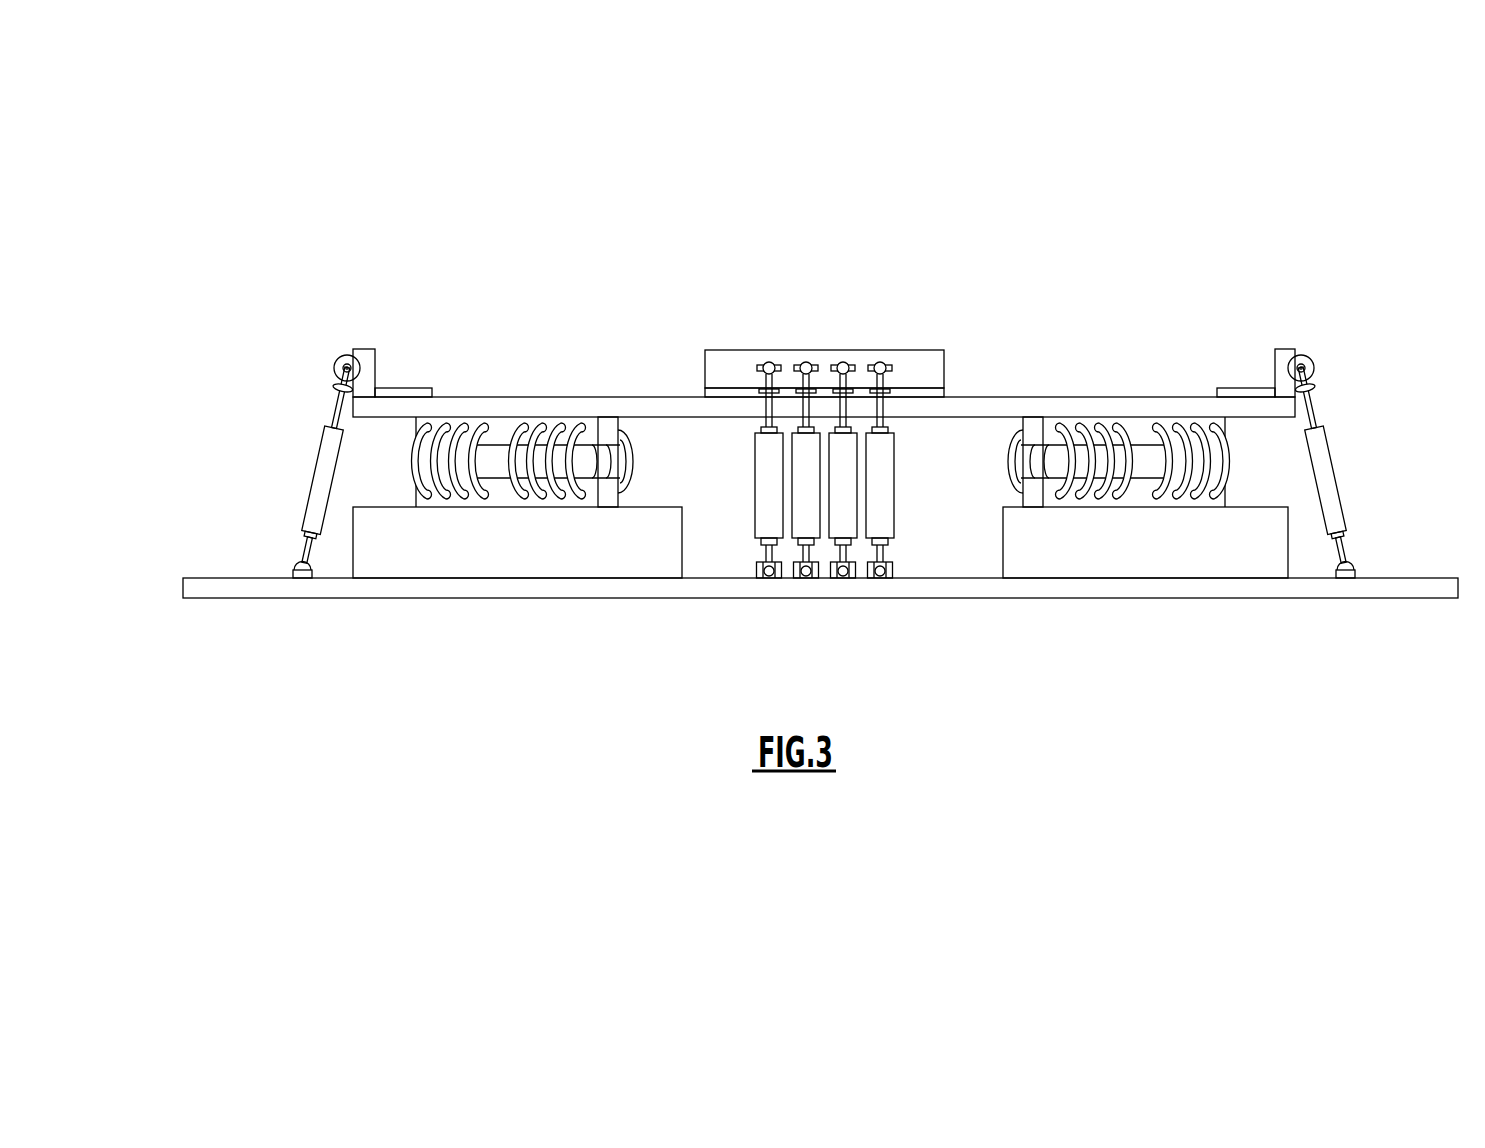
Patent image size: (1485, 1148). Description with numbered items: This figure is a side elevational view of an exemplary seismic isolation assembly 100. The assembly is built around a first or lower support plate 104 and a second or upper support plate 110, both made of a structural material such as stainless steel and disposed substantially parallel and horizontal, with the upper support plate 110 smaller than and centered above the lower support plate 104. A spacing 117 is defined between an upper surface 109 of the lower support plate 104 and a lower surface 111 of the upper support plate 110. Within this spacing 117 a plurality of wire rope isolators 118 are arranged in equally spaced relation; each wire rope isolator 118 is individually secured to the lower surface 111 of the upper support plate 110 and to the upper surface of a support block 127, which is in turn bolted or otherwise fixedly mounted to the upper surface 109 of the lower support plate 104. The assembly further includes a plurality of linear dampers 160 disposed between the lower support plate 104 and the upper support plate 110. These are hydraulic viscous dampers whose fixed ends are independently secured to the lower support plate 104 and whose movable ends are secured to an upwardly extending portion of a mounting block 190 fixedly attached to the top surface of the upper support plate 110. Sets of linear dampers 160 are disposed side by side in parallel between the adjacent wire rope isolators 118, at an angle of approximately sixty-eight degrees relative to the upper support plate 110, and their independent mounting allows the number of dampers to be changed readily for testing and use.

The seismic isolation assembly 100 is at (544, 267).
The lower support plate 104 is at (394, 590).
The upper surface of the lower support plate 109 is at (192, 578).
The upper support plate 110 is at (1168, 397).
The lower surface of the upper support plate 111 is at (380, 418).
The spacing 117 is at (940, 522).
The wire rope isolator 118 is at (495, 483).
The support block 127 is at (588, 522).
The linear damper 160 is at (318, 500).
The mounting block 190 is at (730, 362).